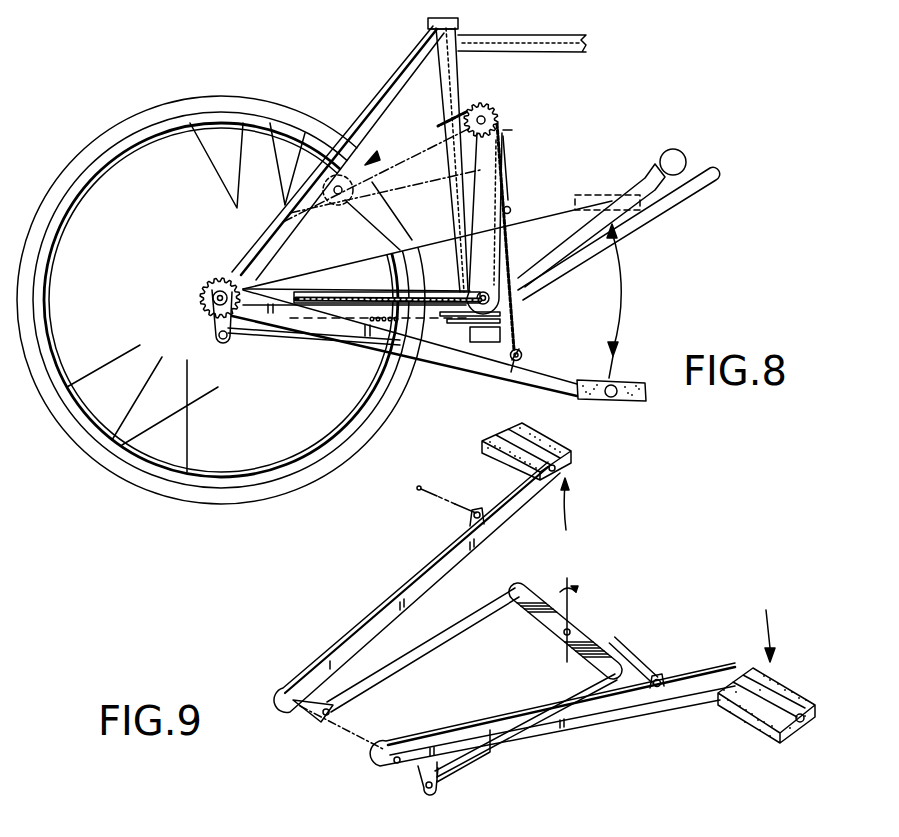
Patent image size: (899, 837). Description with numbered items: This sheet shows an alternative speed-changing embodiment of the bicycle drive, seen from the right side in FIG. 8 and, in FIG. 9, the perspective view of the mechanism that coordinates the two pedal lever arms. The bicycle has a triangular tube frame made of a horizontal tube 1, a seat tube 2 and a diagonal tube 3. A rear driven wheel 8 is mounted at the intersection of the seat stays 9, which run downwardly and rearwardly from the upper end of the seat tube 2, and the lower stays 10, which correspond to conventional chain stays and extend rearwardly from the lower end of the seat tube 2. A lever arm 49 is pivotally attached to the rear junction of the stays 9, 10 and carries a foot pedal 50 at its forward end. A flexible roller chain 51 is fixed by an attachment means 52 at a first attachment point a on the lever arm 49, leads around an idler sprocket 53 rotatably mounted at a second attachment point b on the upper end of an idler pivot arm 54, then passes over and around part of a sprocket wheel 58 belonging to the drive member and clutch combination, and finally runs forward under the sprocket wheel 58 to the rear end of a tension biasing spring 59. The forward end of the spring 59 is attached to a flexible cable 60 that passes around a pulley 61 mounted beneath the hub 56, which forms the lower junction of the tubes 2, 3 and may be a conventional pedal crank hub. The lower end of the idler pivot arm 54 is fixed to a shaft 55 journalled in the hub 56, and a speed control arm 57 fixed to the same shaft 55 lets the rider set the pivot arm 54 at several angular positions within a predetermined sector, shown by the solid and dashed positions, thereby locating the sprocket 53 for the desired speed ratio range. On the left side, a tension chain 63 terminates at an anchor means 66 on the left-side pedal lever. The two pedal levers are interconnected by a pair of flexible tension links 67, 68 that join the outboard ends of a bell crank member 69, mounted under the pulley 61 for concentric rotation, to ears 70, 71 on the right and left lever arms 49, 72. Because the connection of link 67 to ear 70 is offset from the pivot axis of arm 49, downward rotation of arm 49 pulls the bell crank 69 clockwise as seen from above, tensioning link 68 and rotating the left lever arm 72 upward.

In FIG. 8, the horizontal tube 1 is at (529, 55).
In FIG. 8, the seat tube 2 is at (460, 155).
In FIG. 8, the diagonal tube 3 is at (622, 233).
In FIG. 8, the rear driven wheel 8 is at (221, 300).
In FIG. 8, the seat stays 9 is at (338, 153).
In FIG. 8, the lower stays 10 is at (356, 271).
In FIG. 8, the lever arm 49 is at (404, 347).
In FIG. 9, the lever arm 49 is at (552, 714).
In FIG. 8, the foot pedal 50 is at (633, 398).
In FIG. 9, the foot pedal 50 is at (766, 716).
In FIG. 8, the flexible roller chain 51 is at (538, 164).
In FIG. 9, the flexible roller chain 51 is at (636, 651).
In FIG. 8, the attachment means 52 is at (551, 358).
In FIG. 9, the attachment means 52 is at (683, 665).
In FIG. 8, the idler sprocket 53 is at (499, 111).
In FIG. 8, the idler pivot arm 54 is at (507, 223).
In FIG. 8, the shaft 55 is at (524, 292).
In FIG. 8, the hub 56 is at (473, 231).
In FIG. 8, the speed control arm 57 is at (602, 213).
In FIG. 8, the sprocket wheel 58 is at (195, 310).
In FIG. 8, the tension biasing spring 59 is at (385, 294).
In FIG. 8, the flexible cable 60 is at (482, 366).
In FIG. 8, the pulley 61 is at (503, 322).
In FIG. 9, the tension chain 63 is at (442, 509).
In FIG. 9, the anchor means 66 is at (472, 498).
In FIG. 8, the tension link 67 is at (314, 353).
In FIG. 9, the tension link 67 is at (526, 725).
In FIG. 9, the tension link 68 is at (423, 650).
In FIG. 8, the bell crank member 69 is at (544, 351).
In FIG. 9, the bell crank member 69 is at (565, 618).
In FIG. 9, the ear 70 is at (429, 767).
In FIG. 9, the ear 71 is at (306, 726).
In FIG. 9, the lever arm 72 is at (417, 587).
In FIG. 8, the first attachment point a is at (510, 392).
In FIG. 8, the second attachment point b is at (517, 130).